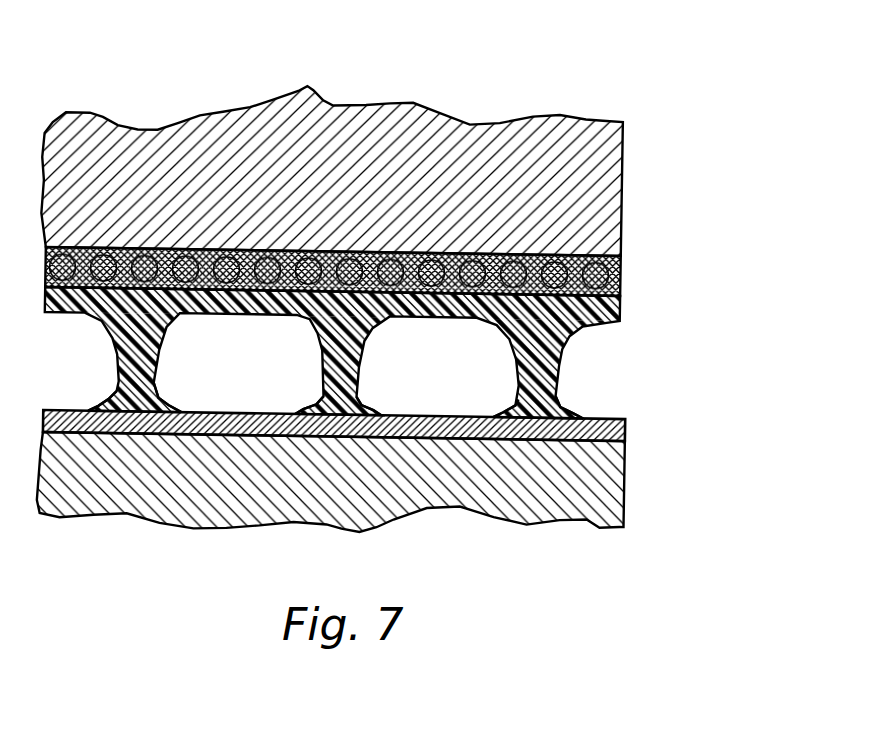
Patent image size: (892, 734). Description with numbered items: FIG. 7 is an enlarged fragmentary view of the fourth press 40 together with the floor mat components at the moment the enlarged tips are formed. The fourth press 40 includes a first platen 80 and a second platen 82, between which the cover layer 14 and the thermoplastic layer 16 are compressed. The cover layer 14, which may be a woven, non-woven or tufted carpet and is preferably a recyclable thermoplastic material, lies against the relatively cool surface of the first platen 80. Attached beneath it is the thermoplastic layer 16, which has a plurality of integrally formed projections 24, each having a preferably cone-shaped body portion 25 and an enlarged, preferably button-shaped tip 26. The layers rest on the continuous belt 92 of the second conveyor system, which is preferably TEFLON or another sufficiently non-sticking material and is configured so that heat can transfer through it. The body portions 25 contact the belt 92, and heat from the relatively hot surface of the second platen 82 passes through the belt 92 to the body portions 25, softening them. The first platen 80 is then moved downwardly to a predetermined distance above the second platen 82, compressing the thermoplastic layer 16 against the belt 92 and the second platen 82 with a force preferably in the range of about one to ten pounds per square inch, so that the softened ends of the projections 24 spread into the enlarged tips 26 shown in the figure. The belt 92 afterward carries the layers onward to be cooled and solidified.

The fourth press 40 is at (637, 92).
The first platen 80 is at (623, 192).
The cover layer 14 is at (630, 265).
The thermoplastic layer 16 is at (623, 295).
The projections 24 is at (555, 387).
The body portions 25 is at (565, 363).
The enlarged tips 26 is at (585, 415).
The continuous belt 92 is at (627, 428).
The second platen 82 is at (630, 480).